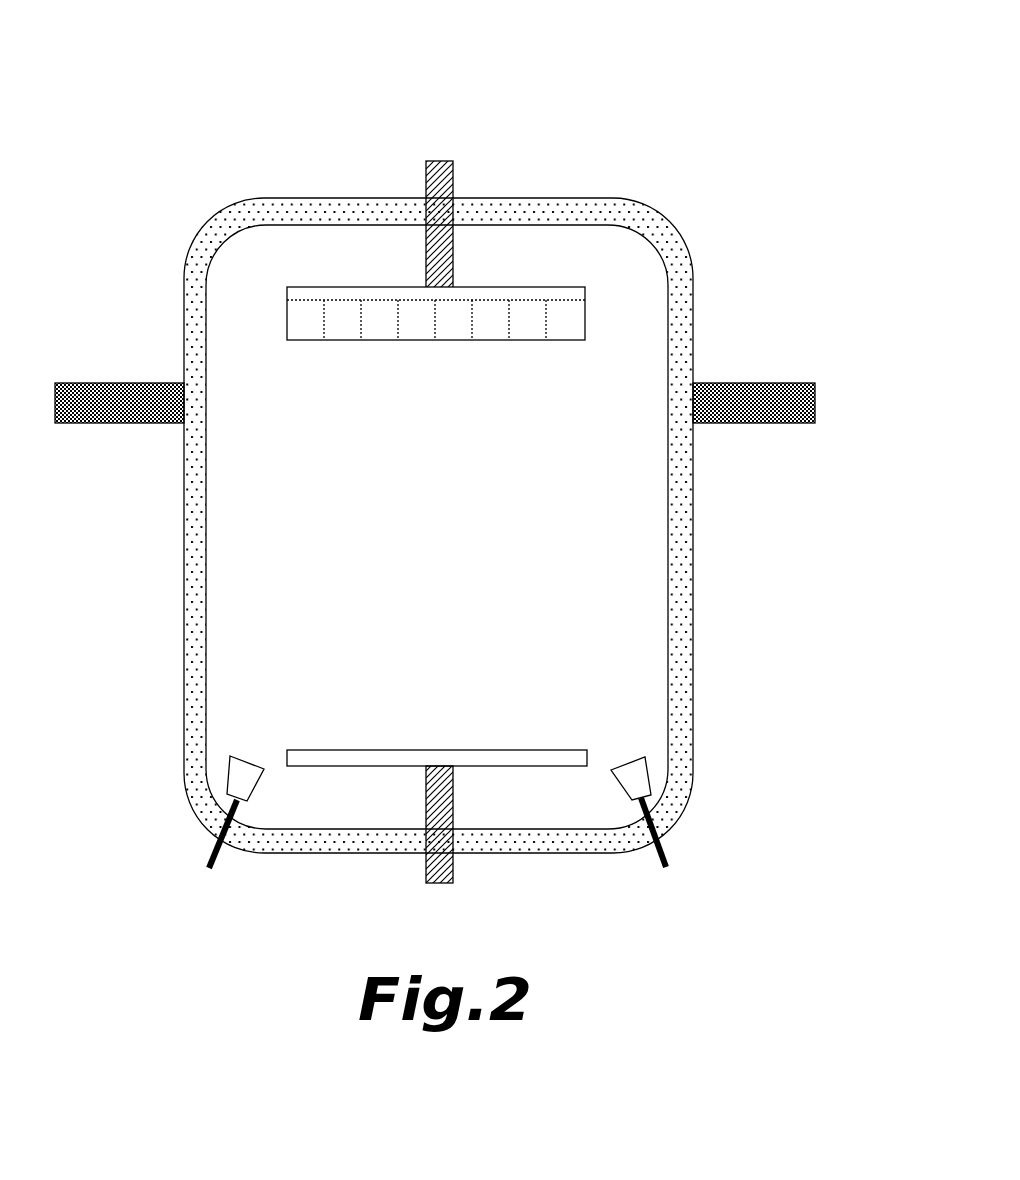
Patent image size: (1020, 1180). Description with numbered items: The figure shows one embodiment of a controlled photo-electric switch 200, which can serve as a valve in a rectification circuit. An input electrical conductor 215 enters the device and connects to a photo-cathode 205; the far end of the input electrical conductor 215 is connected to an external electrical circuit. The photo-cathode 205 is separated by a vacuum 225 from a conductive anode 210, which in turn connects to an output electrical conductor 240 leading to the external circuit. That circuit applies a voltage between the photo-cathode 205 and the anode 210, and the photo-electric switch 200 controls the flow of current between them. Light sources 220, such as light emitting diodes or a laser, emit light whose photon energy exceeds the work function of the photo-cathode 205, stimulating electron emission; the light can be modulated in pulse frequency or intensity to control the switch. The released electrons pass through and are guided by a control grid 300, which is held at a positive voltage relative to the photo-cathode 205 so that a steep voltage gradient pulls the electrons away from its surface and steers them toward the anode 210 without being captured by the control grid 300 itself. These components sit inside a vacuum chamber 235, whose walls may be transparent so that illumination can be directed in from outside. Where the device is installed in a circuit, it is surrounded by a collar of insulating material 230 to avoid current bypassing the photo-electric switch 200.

The controlled photo-electric switch 200 is at (538, 106).
The photo-cathode 205 is at (287, 290).
The conductive anode 210 is at (287, 752).
The input electrical conductor 215 is at (426, 183).
The light sources 220 is at (228, 762).
The vacuum 225 is at (470, 608).
The collar of insulating material 230 is at (118, 383).
The vacuum chamber 235 is at (184, 537).
The output electrical conductor 240 is at (426, 863).
The control grid 300 is at (350, 340).